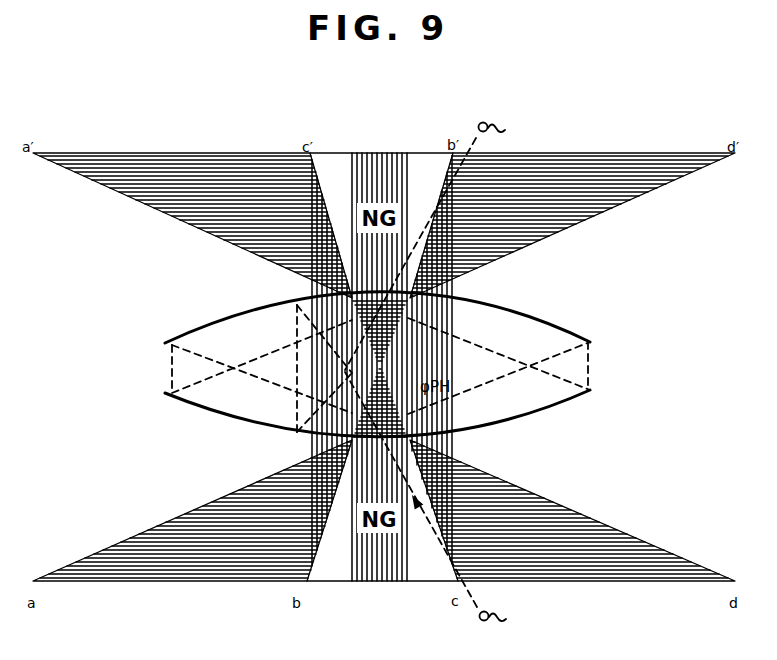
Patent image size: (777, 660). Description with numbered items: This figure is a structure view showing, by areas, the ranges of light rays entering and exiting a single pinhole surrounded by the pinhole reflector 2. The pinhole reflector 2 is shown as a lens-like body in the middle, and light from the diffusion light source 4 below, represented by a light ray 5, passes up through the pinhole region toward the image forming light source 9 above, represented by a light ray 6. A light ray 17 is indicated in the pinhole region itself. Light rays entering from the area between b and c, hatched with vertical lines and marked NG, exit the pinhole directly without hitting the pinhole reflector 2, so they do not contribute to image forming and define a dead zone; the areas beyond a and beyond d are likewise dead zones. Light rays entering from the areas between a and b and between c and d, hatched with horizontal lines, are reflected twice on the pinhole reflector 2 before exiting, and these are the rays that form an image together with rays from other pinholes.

The pinhole reflector 2 is at (542, 312).
The diffusion light source 4 is at (502, 622).
The light ray 5 is at (418, 490).
The light ray 6 is at (410, 243).
The image forming light source 9 is at (500, 133).
The light ray 17 is at (408, 352).